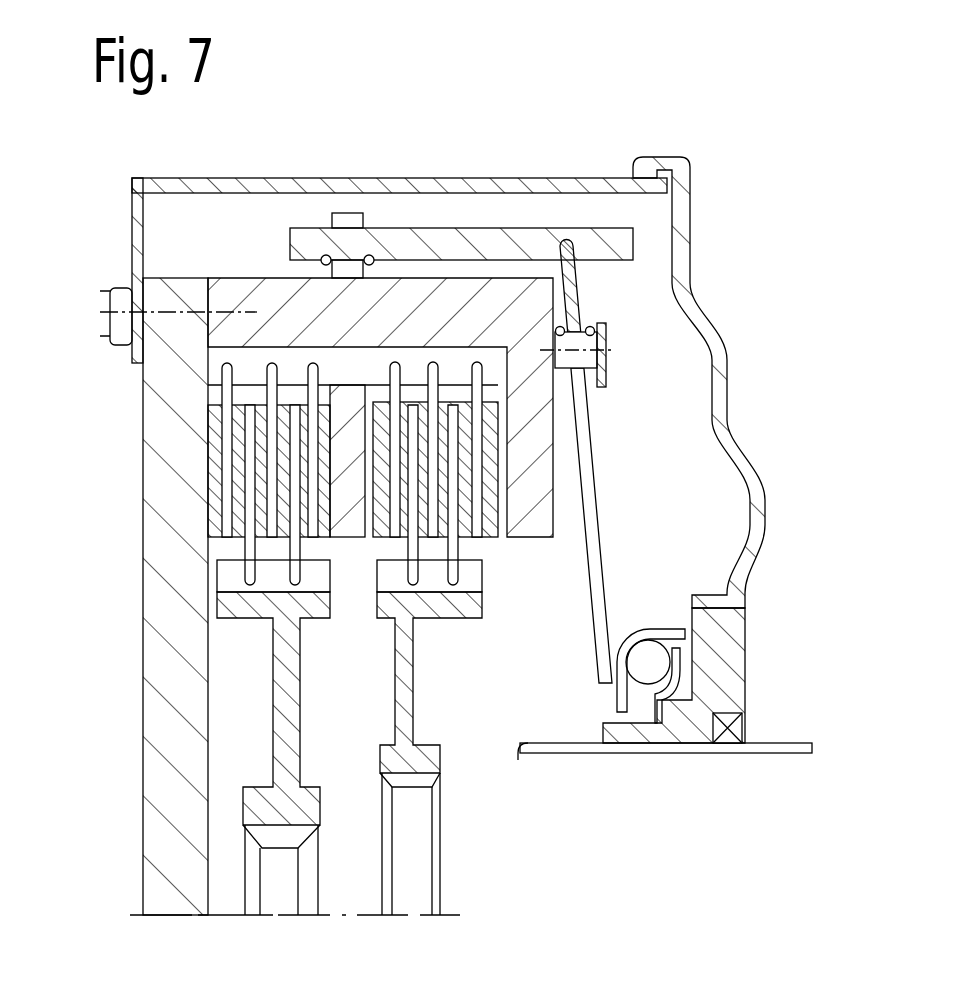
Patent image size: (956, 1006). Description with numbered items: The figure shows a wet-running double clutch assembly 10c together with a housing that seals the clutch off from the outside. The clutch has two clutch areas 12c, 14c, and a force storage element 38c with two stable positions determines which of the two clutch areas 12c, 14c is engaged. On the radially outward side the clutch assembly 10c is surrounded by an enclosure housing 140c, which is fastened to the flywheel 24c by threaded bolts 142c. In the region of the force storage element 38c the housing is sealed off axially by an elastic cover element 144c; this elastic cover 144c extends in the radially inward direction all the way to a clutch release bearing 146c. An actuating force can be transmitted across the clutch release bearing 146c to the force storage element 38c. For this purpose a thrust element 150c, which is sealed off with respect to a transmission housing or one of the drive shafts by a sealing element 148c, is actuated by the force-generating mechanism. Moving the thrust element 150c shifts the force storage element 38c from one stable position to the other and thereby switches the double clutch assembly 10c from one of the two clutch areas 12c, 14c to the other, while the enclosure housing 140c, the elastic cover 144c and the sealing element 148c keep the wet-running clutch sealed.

The double clutch assembly 10c is at (120, 578).
The first clutch area 12c is at (247, 633).
The second clutch area 14c is at (462, 640).
The flywheel 24c is at (146, 455).
The force storage element 38c is at (598, 518).
The enclosure housing 140c is at (370, 188).
The threaded bolts 142c is at (118, 320).
The elastic cover element 144c is at (740, 433).
The clutch release bearing 146c is at (645, 692).
The sealing element 148c is at (748, 723).
The thrust element 150c is at (745, 655).